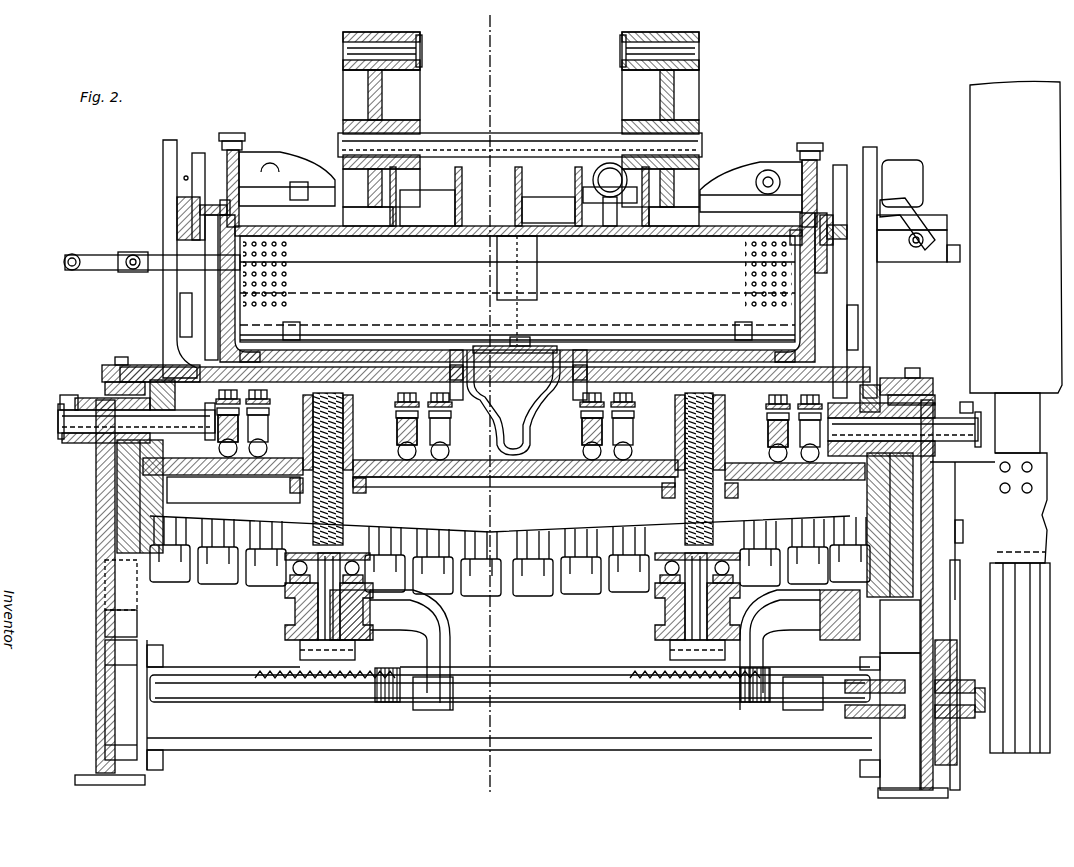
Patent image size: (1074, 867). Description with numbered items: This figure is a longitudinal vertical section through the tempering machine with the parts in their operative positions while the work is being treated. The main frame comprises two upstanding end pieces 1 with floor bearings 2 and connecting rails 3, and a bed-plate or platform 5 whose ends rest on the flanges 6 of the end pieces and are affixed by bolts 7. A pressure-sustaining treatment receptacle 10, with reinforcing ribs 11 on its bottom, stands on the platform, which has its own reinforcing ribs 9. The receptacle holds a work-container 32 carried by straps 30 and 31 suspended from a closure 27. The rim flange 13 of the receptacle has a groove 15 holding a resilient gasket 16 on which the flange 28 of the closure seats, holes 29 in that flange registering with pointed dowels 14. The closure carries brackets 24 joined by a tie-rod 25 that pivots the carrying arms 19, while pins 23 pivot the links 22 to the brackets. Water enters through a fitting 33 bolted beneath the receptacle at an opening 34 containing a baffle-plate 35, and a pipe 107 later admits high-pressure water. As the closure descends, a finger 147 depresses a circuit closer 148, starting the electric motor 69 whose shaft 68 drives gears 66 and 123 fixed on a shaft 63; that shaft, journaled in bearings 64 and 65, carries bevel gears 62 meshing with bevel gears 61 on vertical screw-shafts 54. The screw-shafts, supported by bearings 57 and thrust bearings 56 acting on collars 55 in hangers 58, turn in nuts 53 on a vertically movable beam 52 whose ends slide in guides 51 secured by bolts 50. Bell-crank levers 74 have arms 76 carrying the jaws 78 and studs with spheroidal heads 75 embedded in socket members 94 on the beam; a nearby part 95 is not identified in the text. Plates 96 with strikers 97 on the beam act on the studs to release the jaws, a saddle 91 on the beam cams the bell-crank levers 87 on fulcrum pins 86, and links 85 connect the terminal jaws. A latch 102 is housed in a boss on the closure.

The end pieces 1 is at (96, 698).
The floor bearings 2 is at (83, 775).
The connecting rails 3 is at (264, 742).
The bed-plate or platform 5 is at (943, 356).
The flanges 6 is at (134, 380).
The bolts 7 is at (490, 22).
The reinforcing ribs 9 is at (990, 502).
The treatment receptacle 10 is at (800, 348).
The reinforcing ribs 11 is at (806, 368).
The flange 13 is at (208, 262).
The pointed dowels 14 is at (196, 209).
The groove 15 is at (808, 237).
The gasket 16 is at (234, 220).
The carrying arms 19 is at (400, 133).
The links 22 is at (415, 66).
The pins 23 is at (420, 48).
The brackets 24 is at (355, 101).
The tie-rod 25 is at (702, 142).
The closure 27 is at (432, 231).
The flange 28 is at (233, 208).
The holes 29 is at (215, 168).
The strap 30 is at (288, 246).
The strap 31 is at (362, 335).
The work-container 32 is at (368, 270).
The fitting 33 is at (518, 402).
The opening 34 is at (575, 350).
The baffle-plate 35 is at (545, 346).
The bolts 50 is at (512, 606).
The guides 51 is at (98, 570).
The vertically movable beam 52 is at (490, 477).
The nuts 53 is at (308, 492).
The screw-shafts 54 is at (347, 520).
The supporting collars 55 is at (352, 537).
The thrust bearings 56 is at (359, 569).
The bearings 57 is at (300, 611).
The hangers 58 is at (446, 630).
The bevel gears 61 is at (325, 686).
The bevel gears 62 is at (378, 702).
The shaft 63 is at (596, 696).
The bearings 64 is at (437, 705).
The bearing 65 is at (893, 712).
The gear 66 is at (950, 755).
The shaft 68 is at (958, 572).
The electric motor 69 is at (1036, 753).
The bell-crank levers 74 is at (633, 433).
The spheroidal head 75 is at (230, 455).
The arms 76 is at (276, 588).
The jaws 78 is at (498, 596).
The links 85 is at (180, 324).
The fulcrum pin 86 is at (72, 420).
The bell-crank levers 87 is at (175, 300).
The saddle 91 is at (98, 490).
The socket members 94 is at (628, 462).
The ball 95 is at (258, 455).
The plates 96 is at (632, 400).
The strikers 97 is at (630, 408).
The latch 102 is at (768, 178).
The pipe 107 is at (72, 256).
The gear 123 is at (978, 718).
The finger 147 is at (906, 210).
The circuit closer 148 is at (914, 246).